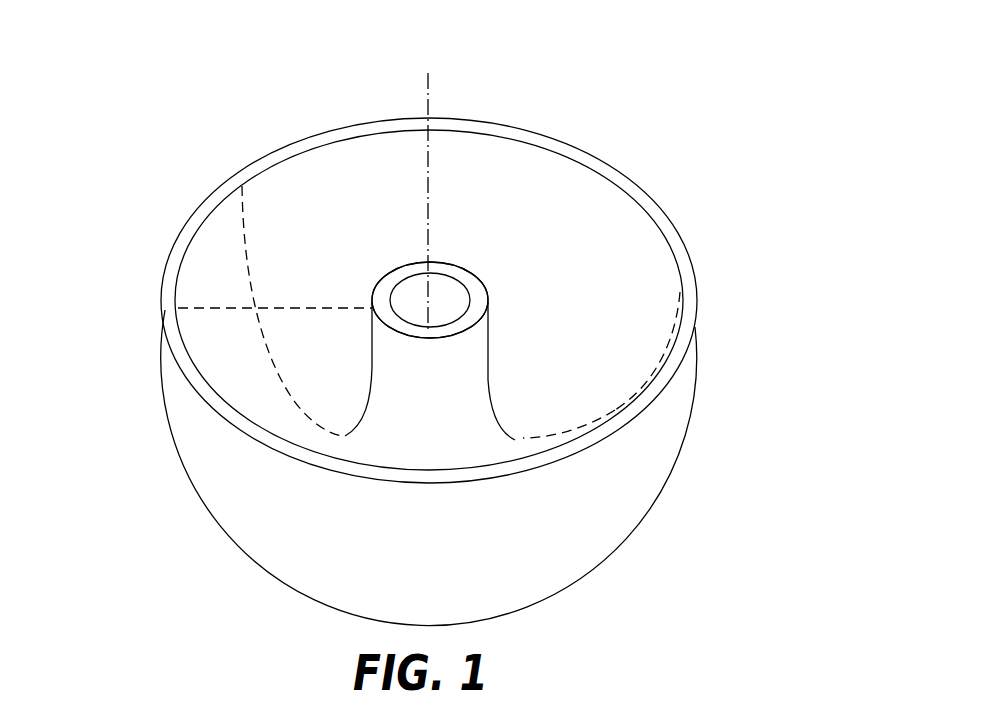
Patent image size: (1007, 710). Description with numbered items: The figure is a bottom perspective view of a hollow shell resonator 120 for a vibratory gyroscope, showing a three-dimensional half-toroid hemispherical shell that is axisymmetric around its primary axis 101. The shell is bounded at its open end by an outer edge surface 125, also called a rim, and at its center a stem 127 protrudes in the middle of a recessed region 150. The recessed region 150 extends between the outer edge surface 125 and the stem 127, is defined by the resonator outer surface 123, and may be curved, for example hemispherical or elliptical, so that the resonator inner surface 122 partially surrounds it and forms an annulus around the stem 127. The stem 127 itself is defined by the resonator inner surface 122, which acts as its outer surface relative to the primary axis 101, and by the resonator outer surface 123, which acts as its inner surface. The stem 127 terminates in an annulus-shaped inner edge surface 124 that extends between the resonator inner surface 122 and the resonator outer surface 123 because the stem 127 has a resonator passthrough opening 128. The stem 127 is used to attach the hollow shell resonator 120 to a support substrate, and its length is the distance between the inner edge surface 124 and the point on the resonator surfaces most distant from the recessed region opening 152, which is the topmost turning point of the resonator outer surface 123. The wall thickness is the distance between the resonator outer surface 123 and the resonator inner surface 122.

The primary axis 101 is at (428, 100).
The hollow shell resonator 120 is at (637, 157).
The resonator inner surface 122 is at (678, 288).
The resonator outer surface 123 is at (404, 308).
The inner edge surface 124 is at (483, 289).
The outer edge surface 125 is at (657, 207).
The stem 127 is at (386, 275).
The resonator passthrough opening 128 is at (448, 305).
The recessed region 150 is at (591, 387).
The recessed region opening 152 is at (223, 307).